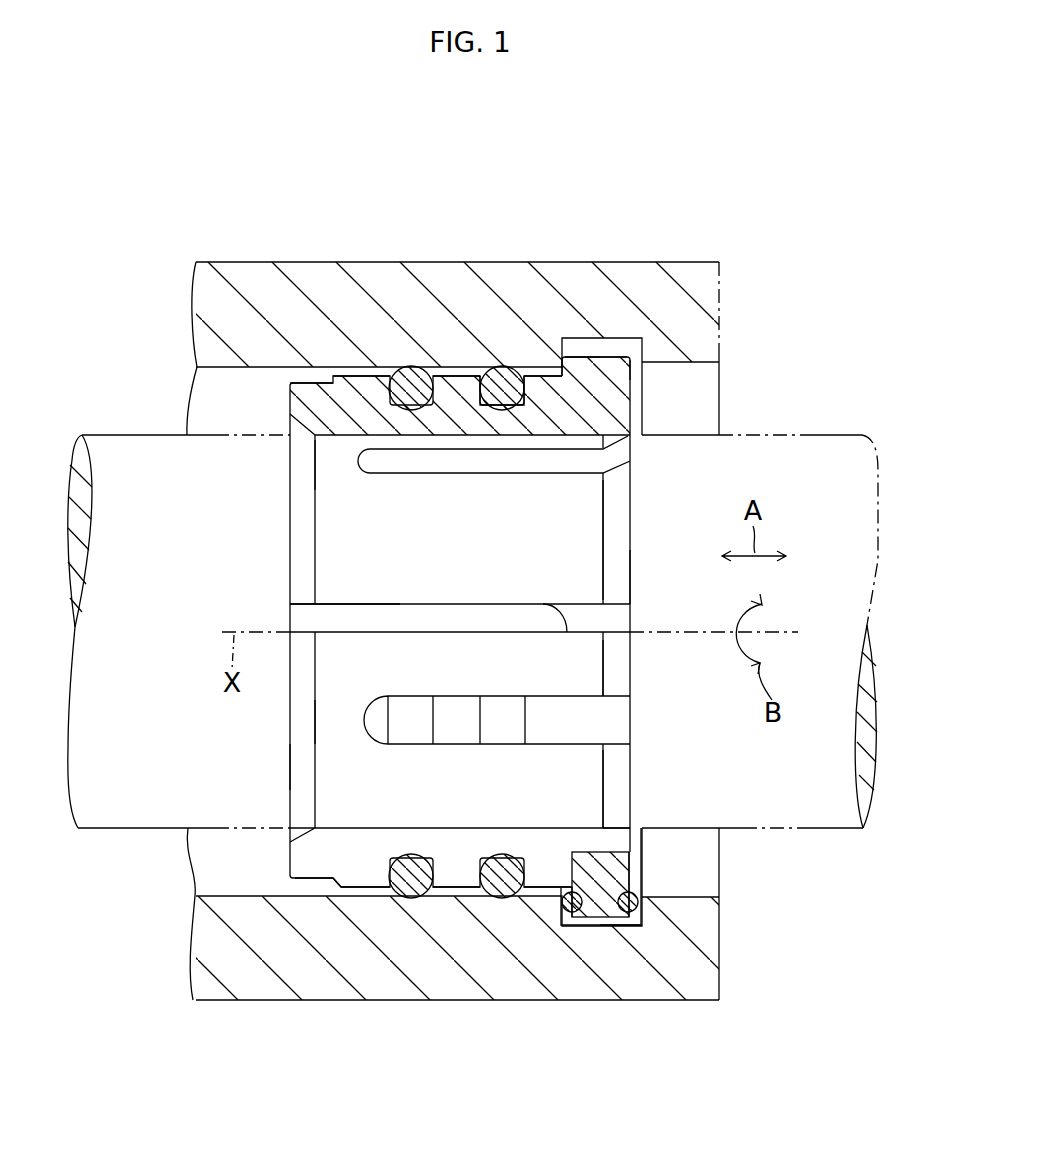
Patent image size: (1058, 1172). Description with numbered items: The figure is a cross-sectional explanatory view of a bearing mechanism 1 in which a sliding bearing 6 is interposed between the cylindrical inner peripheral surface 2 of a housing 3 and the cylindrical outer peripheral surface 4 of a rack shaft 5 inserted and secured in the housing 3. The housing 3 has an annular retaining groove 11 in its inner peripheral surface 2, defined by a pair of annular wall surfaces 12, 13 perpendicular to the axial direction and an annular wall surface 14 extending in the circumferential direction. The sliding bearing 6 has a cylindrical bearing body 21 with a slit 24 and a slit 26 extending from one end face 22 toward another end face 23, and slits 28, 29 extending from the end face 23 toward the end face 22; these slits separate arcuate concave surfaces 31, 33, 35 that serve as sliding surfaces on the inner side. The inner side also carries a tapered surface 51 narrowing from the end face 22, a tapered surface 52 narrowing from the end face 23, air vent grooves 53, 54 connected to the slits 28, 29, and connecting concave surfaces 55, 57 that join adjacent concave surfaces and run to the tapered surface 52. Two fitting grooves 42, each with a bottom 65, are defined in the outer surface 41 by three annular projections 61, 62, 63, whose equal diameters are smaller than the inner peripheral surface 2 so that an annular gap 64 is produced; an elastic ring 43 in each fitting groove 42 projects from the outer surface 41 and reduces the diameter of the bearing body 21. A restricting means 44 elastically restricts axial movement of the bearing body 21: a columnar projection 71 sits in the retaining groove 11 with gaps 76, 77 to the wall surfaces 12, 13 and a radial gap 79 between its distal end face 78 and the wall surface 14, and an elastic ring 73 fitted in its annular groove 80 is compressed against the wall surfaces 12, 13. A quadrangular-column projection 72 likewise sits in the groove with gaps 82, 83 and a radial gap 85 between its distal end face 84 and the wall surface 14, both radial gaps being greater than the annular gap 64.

The bearing mechanism 1 is at (767, 340).
The inner peripheral surface 2 is at (214, 370).
The housing 3 is at (462, 945).
The outer peripheral surface 4 is at (742, 832).
The rack shaft 5 is at (118, 785).
The sliding bearing 6 is at (317, 899).
The retaining groove 11 is at (606, 358).
The wall surface 12 is at (633, 368).
The wall surface 13 is at (550, 376).
The wall surface 14 is at (638, 957).
The bearing body 21 is at (372, 378).
The end face 22 is at (632, 545).
The end face 23 is at (290, 556).
The slit 24 is at (608, 462).
The slit 26 is at (612, 722).
The slit 28 is at (368, 890).
The slit 29 is at (325, 618).
The arcuate concave surface 31 is at (572, 664).
The arcuate concave surface 33 is at (582, 774).
The arcuate concave surface 35 is at (570, 508).
The outer surface 41 is at (316, 400).
The fitting groove 42 is at (410, 898).
The elastic ring 43 is at (411, 370).
The restricting means 44 is at (624, 930).
The tapered surface 51 is at (613, 582).
The tapered surface 52 is at (292, 756).
The air vent groove 53 is at (602, 838).
The air vent groove 54 is at (606, 618).
The connecting concave surface 55 is at (330, 458).
The connecting concave surface 57 is at (328, 716).
The annular projection 61 is at (524, 890).
The annular projection 62 is at (450, 890).
The annular projection 63 is at (346, 895).
The annular gap 64 is at (449, 376).
The bottom 65 is at (522, 378).
The projection 71 is at (600, 922).
The projection 72 is at (640, 350).
The elastic ring 73 is at (640, 906).
The gap 76 is at (648, 926).
The gap 77 is at (574, 921).
The distal end face 78 is at (635, 917).
The radial gap 79 is at (580, 920).
The annular groove 80 is at (650, 897).
The gap 82 is at (650, 362).
The gap 83 is at (562, 366).
The distal end face 84 is at (614, 356).
The radial gap 85 is at (584, 356).